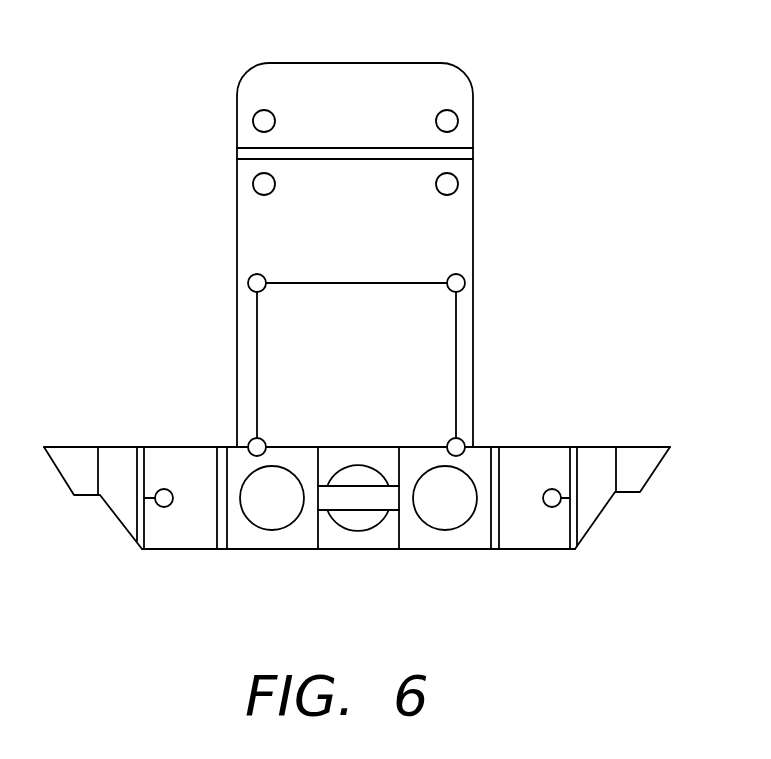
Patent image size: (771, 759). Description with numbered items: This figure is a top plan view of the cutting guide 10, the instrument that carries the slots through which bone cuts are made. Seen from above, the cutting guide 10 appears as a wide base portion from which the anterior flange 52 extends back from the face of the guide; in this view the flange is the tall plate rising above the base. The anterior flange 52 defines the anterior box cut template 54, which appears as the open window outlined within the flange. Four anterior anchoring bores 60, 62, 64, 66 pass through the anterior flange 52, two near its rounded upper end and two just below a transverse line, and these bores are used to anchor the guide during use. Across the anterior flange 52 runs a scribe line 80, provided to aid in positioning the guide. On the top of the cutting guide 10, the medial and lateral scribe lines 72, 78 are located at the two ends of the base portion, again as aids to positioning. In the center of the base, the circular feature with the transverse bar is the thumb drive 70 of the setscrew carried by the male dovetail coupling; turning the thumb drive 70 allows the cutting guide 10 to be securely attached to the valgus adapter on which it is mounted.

The cutting guide 10 is at (357, 411).
The anterior flange 52 is at (445, 223).
The anterior box cut template 54 is at (257, 358).
The anterior anchoring bore 60 is at (257, 110).
The anterior anchoring bore 62 is at (445, 107).
The anterior anchoring bore 64 is at (252, 190).
The anterior anchoring bore 66 is at (457, 182).
The thumb drive 70 is at (368, 510).
The medial scribe line 72 is at (143, 537).
The lateral scribe line 78 is at (575, 538).
The scribe line 80 is at (248, 154).